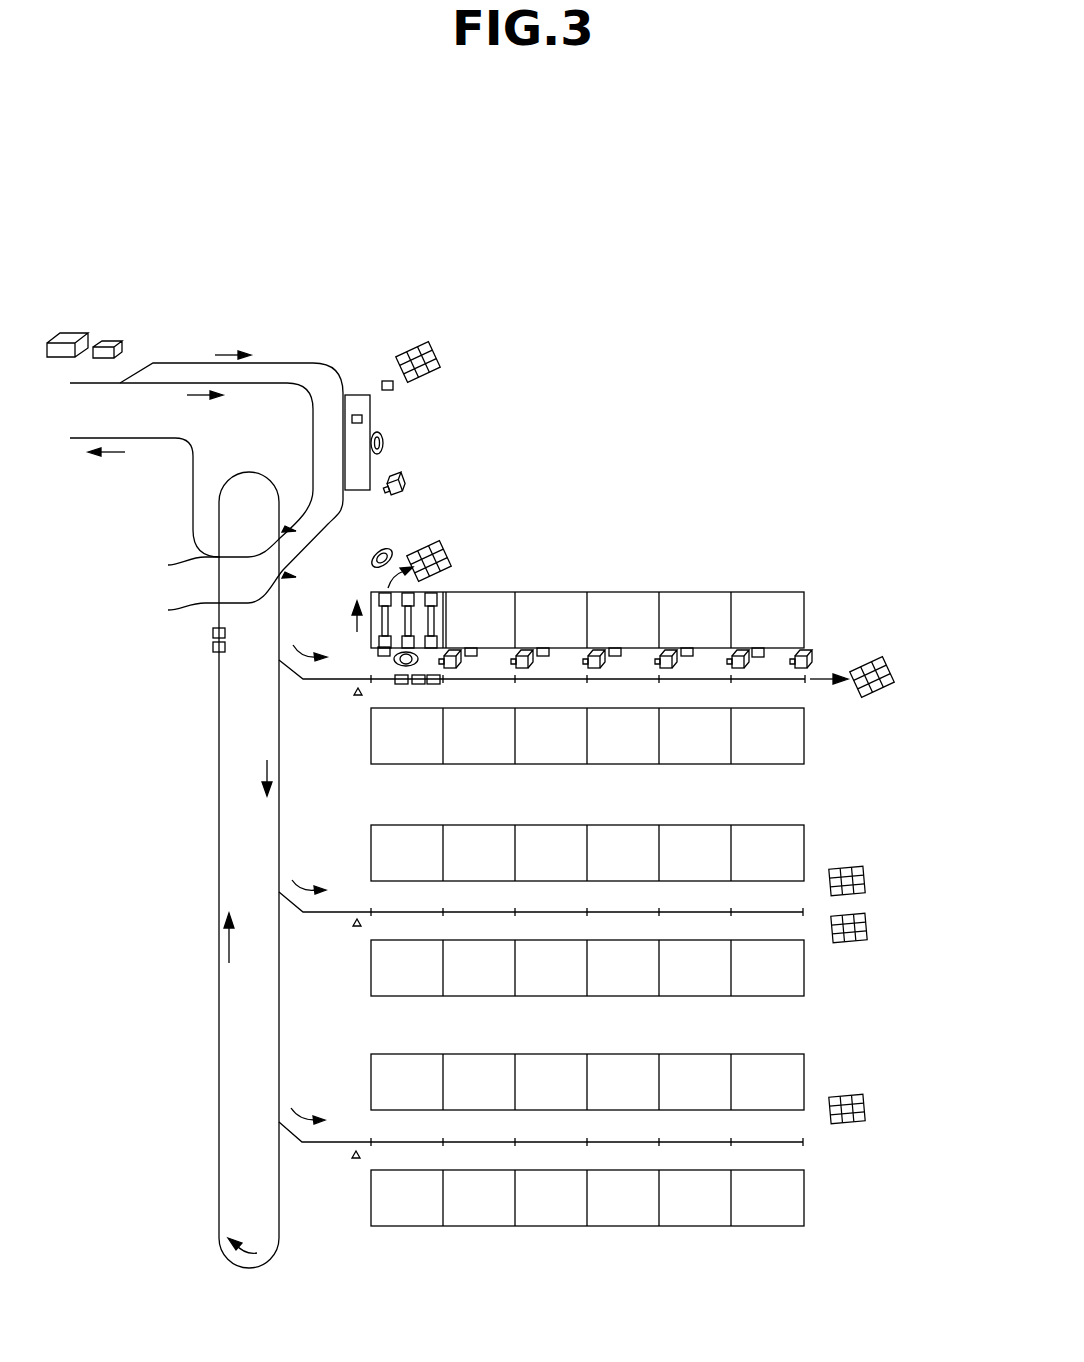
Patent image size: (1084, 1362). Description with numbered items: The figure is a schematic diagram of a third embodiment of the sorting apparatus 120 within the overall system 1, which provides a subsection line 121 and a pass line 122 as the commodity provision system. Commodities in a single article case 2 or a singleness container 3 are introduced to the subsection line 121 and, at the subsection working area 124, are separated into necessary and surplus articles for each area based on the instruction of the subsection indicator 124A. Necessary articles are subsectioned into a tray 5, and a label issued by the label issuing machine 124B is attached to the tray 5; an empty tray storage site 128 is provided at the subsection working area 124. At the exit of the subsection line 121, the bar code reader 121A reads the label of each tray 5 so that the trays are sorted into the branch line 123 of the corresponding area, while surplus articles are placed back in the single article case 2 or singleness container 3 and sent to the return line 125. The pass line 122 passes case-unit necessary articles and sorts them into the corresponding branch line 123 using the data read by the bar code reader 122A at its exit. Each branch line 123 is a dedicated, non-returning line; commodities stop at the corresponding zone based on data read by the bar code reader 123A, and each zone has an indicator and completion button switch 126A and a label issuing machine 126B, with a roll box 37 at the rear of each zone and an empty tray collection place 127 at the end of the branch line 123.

The sample handling system 1 is at (272, 256).
The sorting apparatus 120 is at (190, 291).
The subsection line 121 is at (300, 360).
The pass line 122 is at (255, 386).
The bar code reader BCR 121A is at (218, 564).
The bar code reader BCR 122A is at (219, 536).
The return line 125 is at (150, 440).
The single article case 2 is at (70, 332).
The singleness container 3 is at (110, 341).
The subsection working area 124 is at (357, 398).
The subsection indicator 124A is at (393, 385).
The label issuing machine 124B is at (410, 481).
The tray 5 is at (362, 418).
The empty tray storage site 128 is at (425, 346).
The roll box 37 is at (450, 553).
The branch line 123 is at (778, 682).
The bar code reader BCR 123A is at (358, 698).
The indicator and completion button switch 126A is at (757, 647).
The label issuing machine 126B is at (810, 653).
The empty tray collection place 127 is at (893, 663).